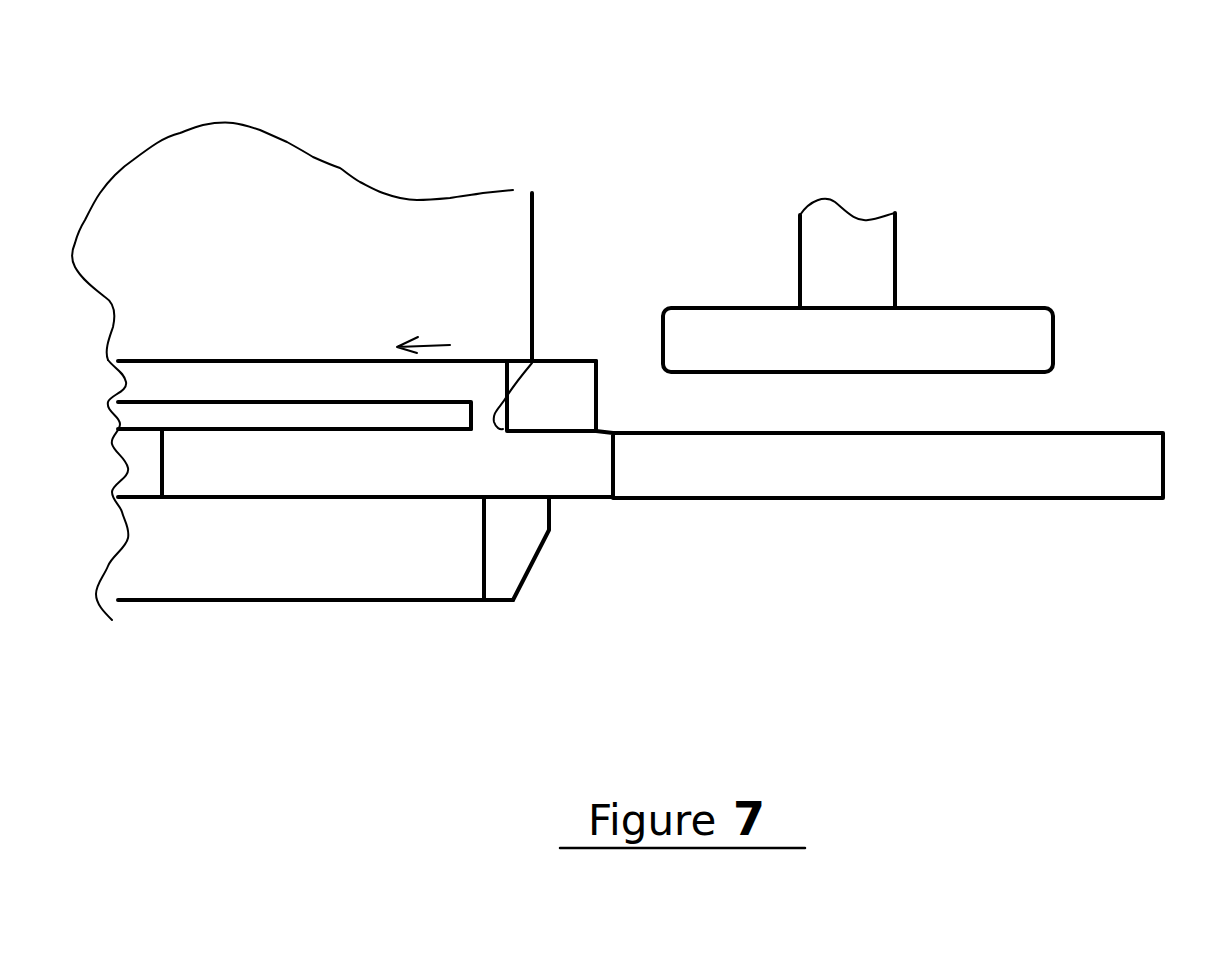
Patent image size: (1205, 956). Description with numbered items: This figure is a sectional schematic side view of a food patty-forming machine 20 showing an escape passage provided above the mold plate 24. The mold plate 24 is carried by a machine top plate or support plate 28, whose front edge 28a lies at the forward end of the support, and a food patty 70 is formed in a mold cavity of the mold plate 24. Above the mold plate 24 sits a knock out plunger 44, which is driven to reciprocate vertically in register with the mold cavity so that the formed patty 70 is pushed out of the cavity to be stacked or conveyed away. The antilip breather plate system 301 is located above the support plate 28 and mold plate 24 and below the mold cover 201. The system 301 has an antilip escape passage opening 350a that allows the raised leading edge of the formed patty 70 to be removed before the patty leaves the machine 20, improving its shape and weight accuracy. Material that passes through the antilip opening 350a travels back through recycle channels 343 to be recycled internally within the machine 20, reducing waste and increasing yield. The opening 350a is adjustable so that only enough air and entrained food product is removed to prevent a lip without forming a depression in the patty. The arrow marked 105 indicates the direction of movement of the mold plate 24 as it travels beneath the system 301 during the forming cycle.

The machine 20 is at (958, 86).
The mold cover 201 is at (380, 283).
The recycle channel 343 is at (322, 382).
The direction of movement 105 is at (438, 326).
The antilip escape passage opening 350a is at (532, 363).
The antilip breather plate system 301 is at (622, 407).
The food patty 70 is at (592, 487).
The mold plate 24 is at (1128, 490).
The support plate 28 is at (437, 587).
The front edge of the support plate 28a is at (520, 558).
The knock out plunger 44 is at (1040, 338).